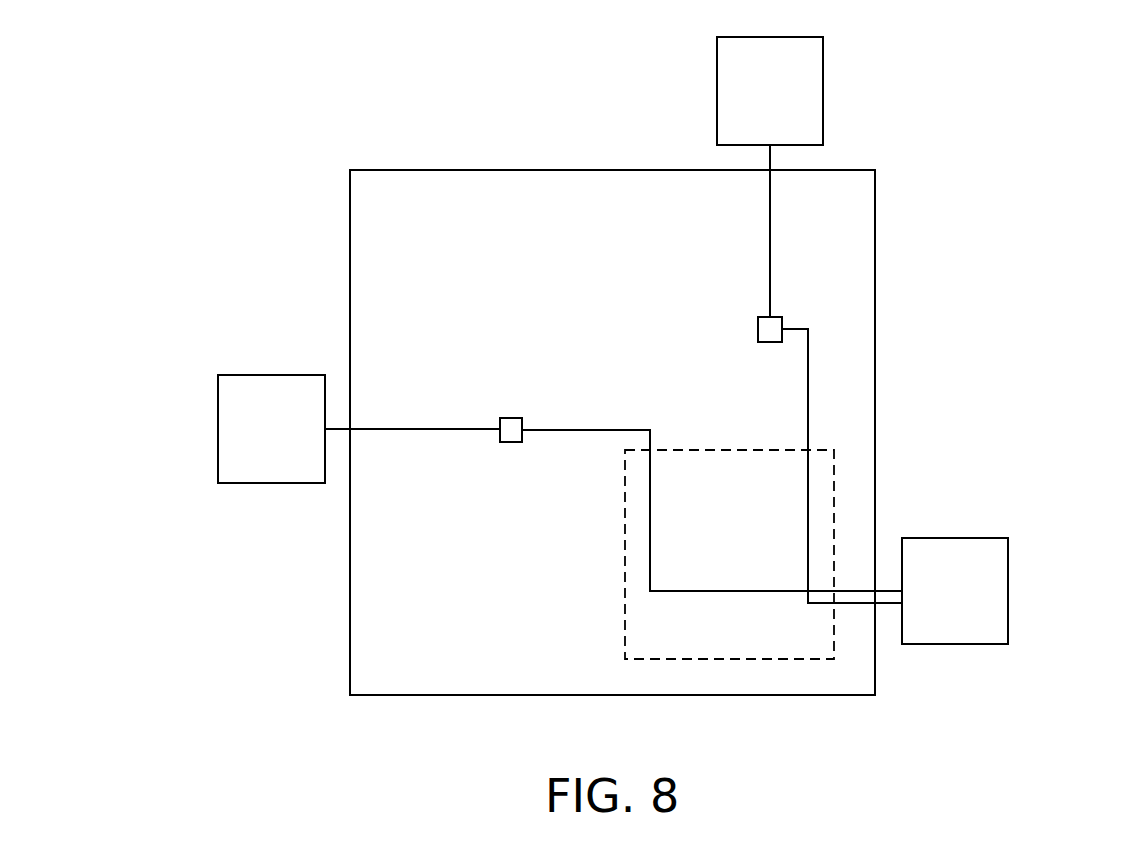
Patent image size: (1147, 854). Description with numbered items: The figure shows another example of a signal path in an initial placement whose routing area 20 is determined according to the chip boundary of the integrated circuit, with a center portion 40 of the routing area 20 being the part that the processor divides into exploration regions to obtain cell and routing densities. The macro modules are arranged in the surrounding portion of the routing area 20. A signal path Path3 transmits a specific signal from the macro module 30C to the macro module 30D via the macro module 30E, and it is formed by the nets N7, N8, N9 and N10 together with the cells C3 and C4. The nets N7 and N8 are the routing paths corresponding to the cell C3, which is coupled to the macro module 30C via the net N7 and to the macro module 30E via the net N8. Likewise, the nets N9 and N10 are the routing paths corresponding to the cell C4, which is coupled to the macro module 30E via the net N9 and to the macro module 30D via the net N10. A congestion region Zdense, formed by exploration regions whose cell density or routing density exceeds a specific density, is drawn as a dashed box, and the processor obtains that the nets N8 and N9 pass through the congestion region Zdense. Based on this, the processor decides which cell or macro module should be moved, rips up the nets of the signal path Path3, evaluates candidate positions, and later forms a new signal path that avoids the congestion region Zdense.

The center portion 40 is at (876, 238).
The macro module 30D is at (798, 106).
The macro module 30C is at (298, 446).
The macro module 30E is at (982, 609).
The net N10 is at (768, 240).
The cell C4 is at (756, 330).
The net N9 is at (806, 390).
The net N7 is at (415, 431).
The signal path Path3 is at (434, 412).
The cell C3 is at (511, 443).
The net N8 is at (581, 432).
The congestion region Zdense is at (624, 555).
The routing area 20 is at (1105, 710).